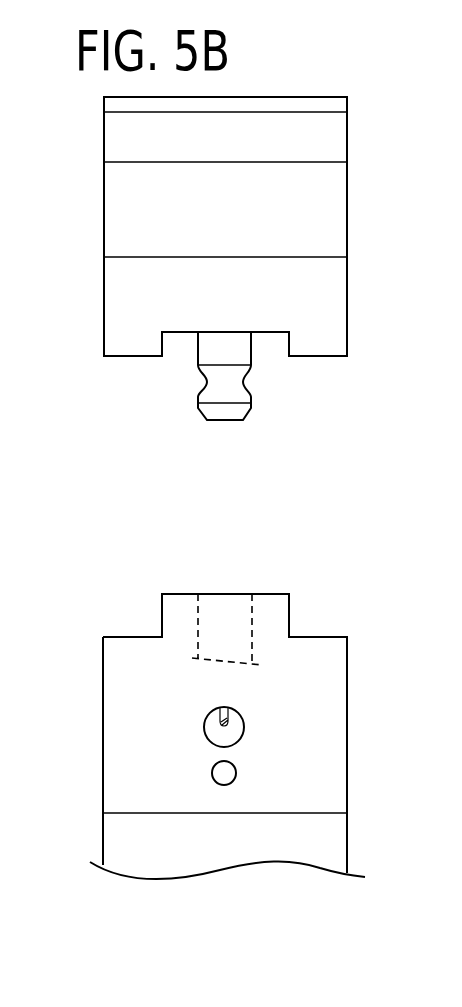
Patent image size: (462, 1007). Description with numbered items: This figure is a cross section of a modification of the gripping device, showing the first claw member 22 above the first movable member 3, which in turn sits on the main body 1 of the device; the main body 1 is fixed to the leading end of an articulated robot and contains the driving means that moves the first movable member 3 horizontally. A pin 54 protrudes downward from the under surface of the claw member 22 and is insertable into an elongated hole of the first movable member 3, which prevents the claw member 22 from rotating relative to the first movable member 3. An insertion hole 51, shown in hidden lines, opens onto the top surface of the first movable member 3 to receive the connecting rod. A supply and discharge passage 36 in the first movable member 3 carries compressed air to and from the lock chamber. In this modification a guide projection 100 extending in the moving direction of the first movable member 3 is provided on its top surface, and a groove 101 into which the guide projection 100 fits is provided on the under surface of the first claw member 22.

The claw member 22 is at (115, 146).
The groove 101 is at (280, 353).
The pin 54 is at (228, 393).
The guide projection 100 is at (273, 615).
The insertion hole 51 is at (243, 605).
The first movable member 3 is at (302, 747).
The supply and discharge passage 36 is at (227, 777).
The main body 1 is at (315, 843).